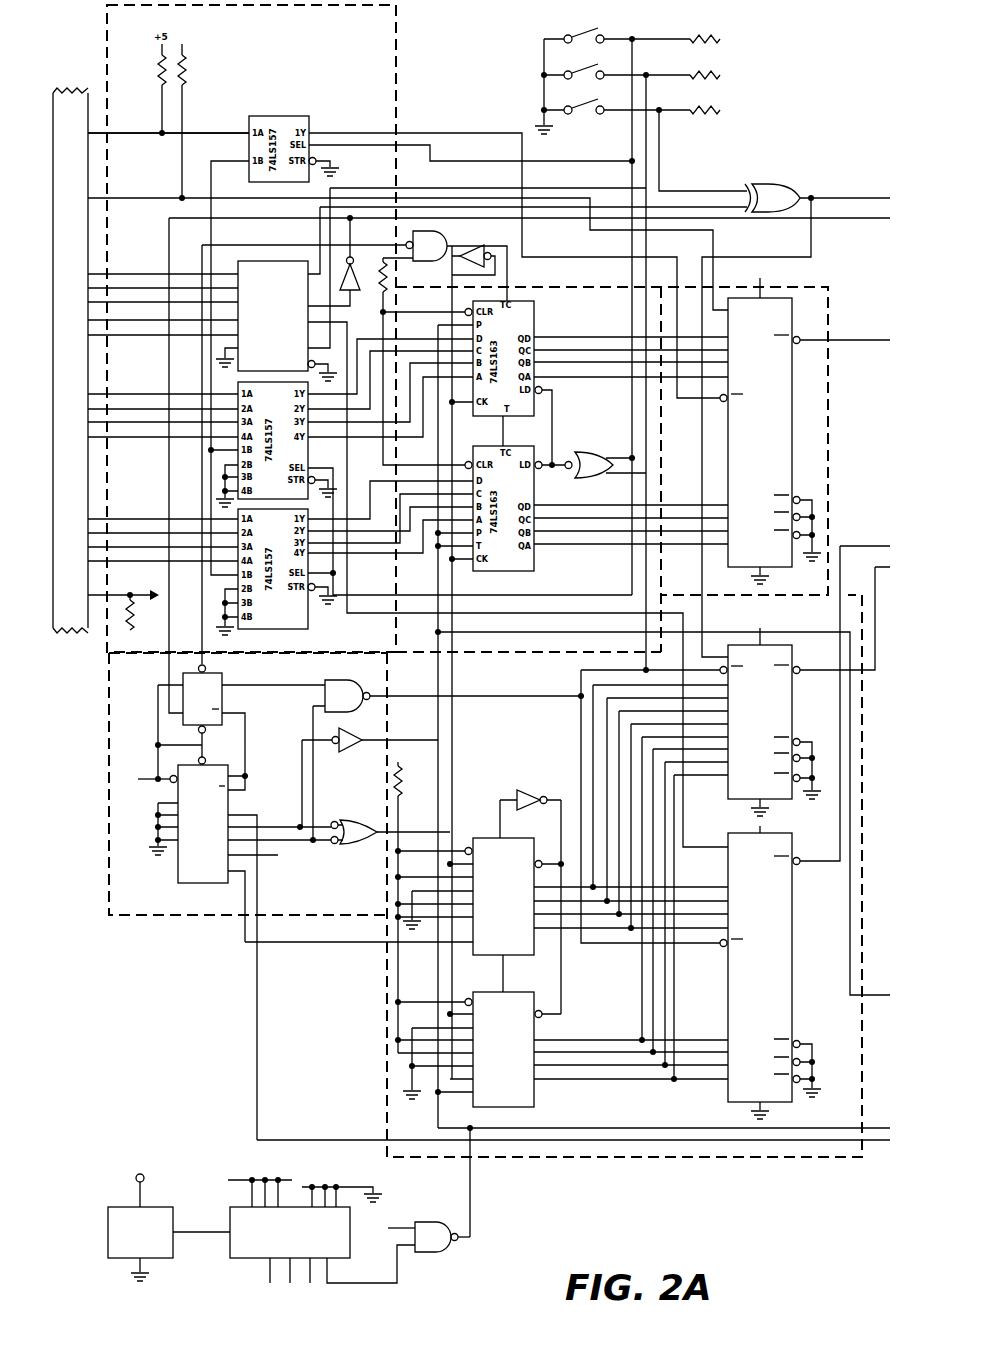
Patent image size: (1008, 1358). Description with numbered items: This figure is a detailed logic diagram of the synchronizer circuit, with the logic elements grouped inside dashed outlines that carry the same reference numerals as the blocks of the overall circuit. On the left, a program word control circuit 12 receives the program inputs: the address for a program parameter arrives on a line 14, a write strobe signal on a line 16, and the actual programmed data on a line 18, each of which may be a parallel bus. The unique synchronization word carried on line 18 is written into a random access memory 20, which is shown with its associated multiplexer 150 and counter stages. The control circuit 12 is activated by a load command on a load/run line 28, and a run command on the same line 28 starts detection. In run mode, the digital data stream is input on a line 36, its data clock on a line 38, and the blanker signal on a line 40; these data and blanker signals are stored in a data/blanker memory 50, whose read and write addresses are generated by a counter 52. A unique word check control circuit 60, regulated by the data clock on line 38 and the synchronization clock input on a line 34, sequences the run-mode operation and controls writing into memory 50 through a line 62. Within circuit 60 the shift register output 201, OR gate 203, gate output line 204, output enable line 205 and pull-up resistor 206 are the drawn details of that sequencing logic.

The program word control circuit 12 is at (398, 42).
The line 14 is at (86, 395).
The line 16 is at (159, 129).
The line 18 is at (399, 251).
The random access memory 20 is at (601, 284).
The load/run line 28 is at (159, 140).
The line 34 is at (370, 1283).
The line 36 is at (154, 274).
The line 38 is at (154, 288).
The line 40 is at (154, 302).
The data/blanker memory 50 is at (567, 916).
The counter 52 is at (386, 1052).
The unique word check control circuit 60 is at (251, 896).
The line 62 is at (510, 696).
The multiplexer 150 is at (300, 245).
The shift register output 201 is at (278, 852).
The OR gate 203 is at (286, 826).
The gate output line 204 is at (290, 820).
The output enable line 205 is at (582, 614).
The pull-up resistor 206 is at (399, 834).